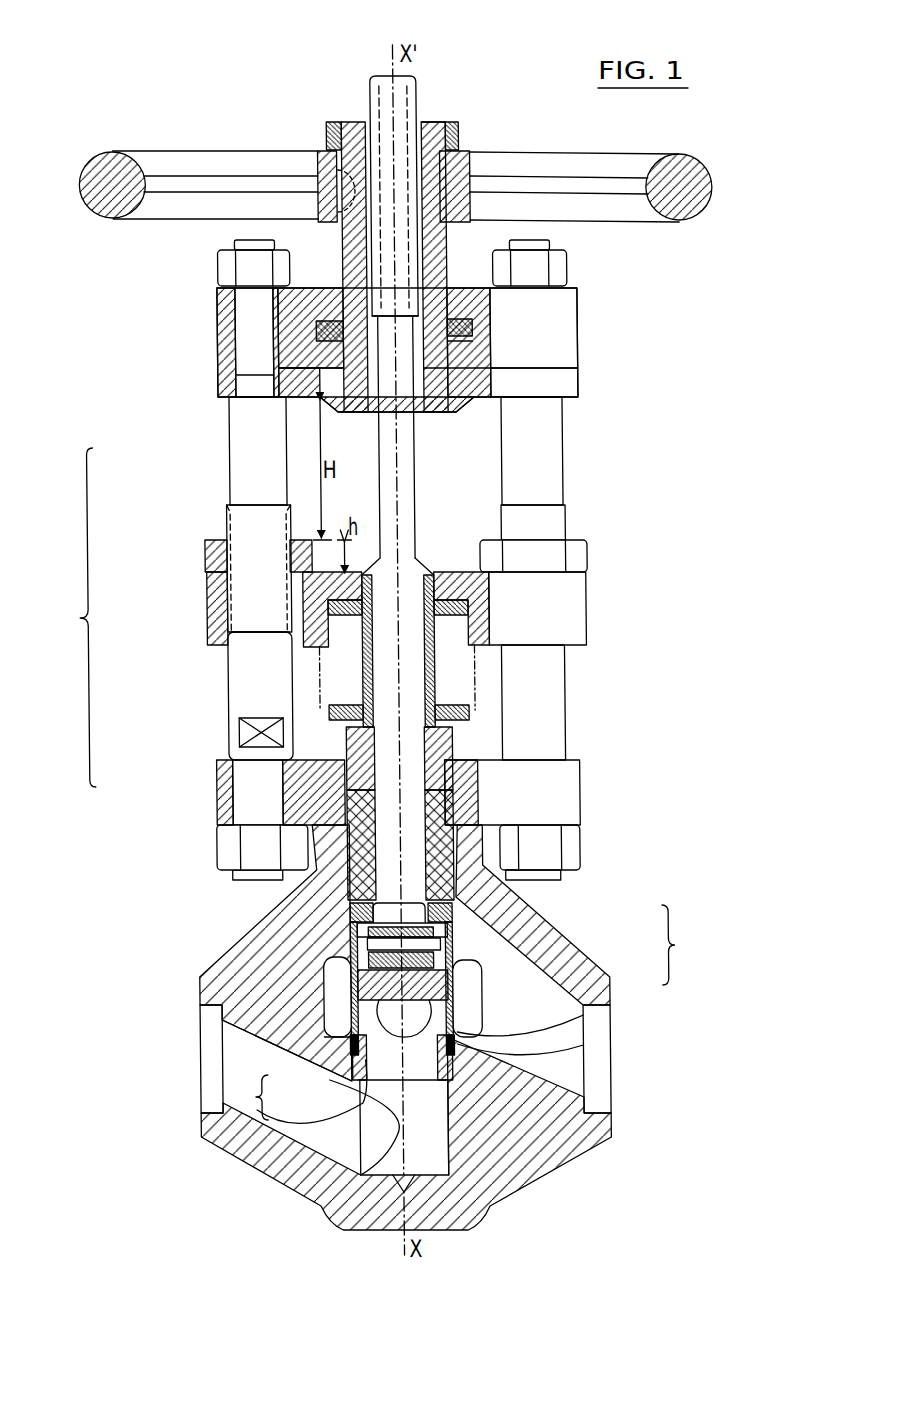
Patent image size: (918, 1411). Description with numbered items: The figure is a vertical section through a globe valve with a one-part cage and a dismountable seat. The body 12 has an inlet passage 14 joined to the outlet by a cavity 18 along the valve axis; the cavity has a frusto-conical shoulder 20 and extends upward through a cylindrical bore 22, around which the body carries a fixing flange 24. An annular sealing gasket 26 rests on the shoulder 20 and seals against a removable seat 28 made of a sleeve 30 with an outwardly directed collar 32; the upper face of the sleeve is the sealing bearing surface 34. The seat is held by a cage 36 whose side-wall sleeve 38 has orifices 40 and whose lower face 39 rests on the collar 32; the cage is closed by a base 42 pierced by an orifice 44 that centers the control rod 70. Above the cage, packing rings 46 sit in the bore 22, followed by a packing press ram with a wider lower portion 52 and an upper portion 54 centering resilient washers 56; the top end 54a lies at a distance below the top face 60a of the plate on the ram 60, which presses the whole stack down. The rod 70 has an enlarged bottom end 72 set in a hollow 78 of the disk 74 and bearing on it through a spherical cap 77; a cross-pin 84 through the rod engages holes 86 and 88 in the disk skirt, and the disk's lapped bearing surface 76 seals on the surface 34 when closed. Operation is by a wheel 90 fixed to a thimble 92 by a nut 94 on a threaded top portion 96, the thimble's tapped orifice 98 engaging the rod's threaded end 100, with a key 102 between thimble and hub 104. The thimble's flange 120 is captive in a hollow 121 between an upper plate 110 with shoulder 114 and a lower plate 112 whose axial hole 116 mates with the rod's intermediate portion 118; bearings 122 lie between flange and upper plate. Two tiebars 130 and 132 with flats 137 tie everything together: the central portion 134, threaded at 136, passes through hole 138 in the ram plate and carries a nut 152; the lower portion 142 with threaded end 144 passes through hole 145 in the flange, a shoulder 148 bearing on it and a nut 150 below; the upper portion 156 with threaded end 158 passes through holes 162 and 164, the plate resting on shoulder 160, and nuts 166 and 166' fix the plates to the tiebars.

The body 12 is at (562, 1150).
The inlet passage 14 is at (200, 1075).
The cavity 18 is at (318, 1022).
The shoulder 20 is at (583, 1055).
The cylindrical bore 22 is at (555, 852).
The fixing flange 24 is at (575, 778).
The annular sealing gasket 26 is at (404, 1116).
The removable seat 28 is at (251, 1097).
The sleeve 30 is at (345, 1072).
The collar 32 is at (347, 1088).
The sealing bearing surface 34 is at (460, 1038).
The cage 36 is at (684, 945).
The sleeve 38 is at (440, 985).
The lower face 39 is at (598, 1105).
The orifices 40 is at (402, 1057).
The base 42 is at (444, 932).
The orifice 44 is at (446, 905).
The packing rings 46 is at (446, 888).
The lower portion 52 is at (450, 740).
The upper portion 54 is at (432, 665).
The top end 54a is at (433, 570).
The resilient washers 56 is at (458, 640).
The ram 60 is at (570, 592).
The top face 60a is at (460, 570).
The control rod 70 is at (396, 472).
The bottom end 72 is at (350, 912).
The disk 74 is at (323, 1000).
The lapped annular bearing surface 76 is at (474, 963).
The spherical cap 77 is at (314, 975).
The hollow 78 is at (425, 1012).
The cross-pin 84 is at (350, 930).
The hole 86 is at (428, 960).
The hole 88 is at (338, 952).
The wheel 90 is at (692, 214).
The thimble 92 is at (342, 250).
The nut 94 is at (452, 137).
The threaded top portion 96 is at (425, 118).
The tapped axial orifice 98 is at (372, 110).
The threaded end 100 is at (407, 95).
The key 102 is at (332, 165).
The hub 104 is at (330, 124).
The upper plate 110 is at (560, 312).
The lower plate 112 is at (560, 382).
The shoulder 114 is at (467, 288).
The axial hole 116 is at (320, 413).
The intermediate portion 118 is at (413, 420).
The flange 120 is at (470, 341).
The hollow 121 is at (313, 333).
The bearings 122 is at (470, 326).
The tiebar 130 is at (58, 632).
The tiebar 132 is at (537, 437).
The central portion 134 is at (213, 655).
The threaded part 136 is at (216, 560).
The wrench-receiving flats 137 is at (250, 700).
The hole 138 is at (222, 605).
The lower portion 142 is at (245, 798).
The threaded end 144 is at (235, 878).
The hole 145 is at (228, 775).
The shoulder 148 is at (236, 730).
The nut 150 is at (220, 848).
The nut 152 is at (218, 540).
The upper portion 156 is at (223, 435).
The threaded end 158 is at (236, 292).
The shoulder 160 is at (235, 390).
The hole 162 is at (235, 380).
The hole 164 is at (232, 325).
The nut 166 is at (226, 261).
The nut 166' is at (560, 255).